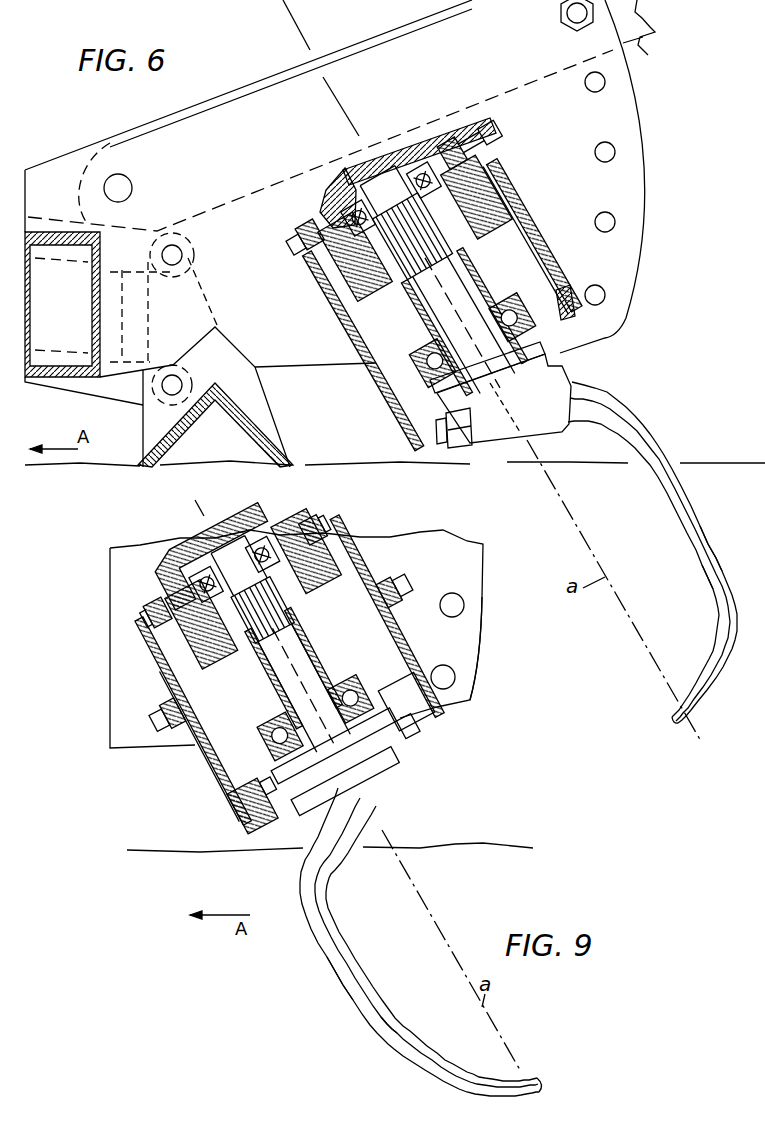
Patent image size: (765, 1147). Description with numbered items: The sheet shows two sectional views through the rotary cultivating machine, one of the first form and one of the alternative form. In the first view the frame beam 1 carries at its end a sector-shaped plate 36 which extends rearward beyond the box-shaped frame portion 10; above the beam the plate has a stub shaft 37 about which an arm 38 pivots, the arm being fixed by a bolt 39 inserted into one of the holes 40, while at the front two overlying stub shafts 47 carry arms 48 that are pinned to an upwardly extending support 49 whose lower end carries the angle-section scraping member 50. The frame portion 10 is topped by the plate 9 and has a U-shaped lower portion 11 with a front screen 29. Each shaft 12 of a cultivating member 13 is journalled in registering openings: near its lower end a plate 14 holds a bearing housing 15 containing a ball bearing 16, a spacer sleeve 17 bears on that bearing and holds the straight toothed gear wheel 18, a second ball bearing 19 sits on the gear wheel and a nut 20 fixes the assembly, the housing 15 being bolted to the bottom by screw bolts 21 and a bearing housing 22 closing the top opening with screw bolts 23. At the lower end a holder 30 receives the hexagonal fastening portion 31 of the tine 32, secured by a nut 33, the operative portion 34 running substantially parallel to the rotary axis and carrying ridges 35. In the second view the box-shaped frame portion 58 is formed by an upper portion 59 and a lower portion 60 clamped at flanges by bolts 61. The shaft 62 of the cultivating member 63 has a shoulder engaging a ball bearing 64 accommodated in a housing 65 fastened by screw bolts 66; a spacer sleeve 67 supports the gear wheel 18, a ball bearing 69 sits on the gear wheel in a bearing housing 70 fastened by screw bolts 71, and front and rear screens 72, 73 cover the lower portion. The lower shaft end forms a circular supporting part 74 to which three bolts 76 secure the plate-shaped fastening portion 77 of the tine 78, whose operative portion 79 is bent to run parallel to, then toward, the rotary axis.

In FIG. 6, the frame beam 1 is at (67, 375).
In FIG. 6, the plate 9 is at (503, 118).
In FIG. 6, the box-shaped frame portion 10 is at (543, 233).
In FIG. 6, the lower portion 11 is at (523, 213).
In FIG. 6, the shaft 12 is at (463, 283).
In FIG. 6, the cultivating member 13 is at (623, 517).
In FIG. 6, the plate 14 is at (527, 344).
In FIG. 6, the bearing housing 15 is at (417, 370).
In FIG. 6, the ball bearing 16 is at (507, 307).
In FIG. 6, the spacer sleeve 17 is at (423, 318).
In FIG. 6, the gear wheel 18 is at (355, 286).
In FIG. 9, the gear wheel 18 is at (227, 649).
In FIG. 6, the ball bearing 19 is at (430, 157).
In FIG. 6, the nut 20 is at (353, 163).
In FIG. 6, the screw bolts 21 is at (570, 318).
In FIG. 6, the bearing housing 22 is at (400, 138).
In FIG. 6, the screw bolts 23 is at (307, 224).
In FIG. 6, the screen 29 is at (402, 441).
In FIG. 6, the holder 30 is at (525, 444).
In FIG. 6, the fastening portion 31 is at (450, 446).
In FIG. 6, the tine 32 is at (662, 440).
In FIG. 6, the nut 33 is at (467, 451).
In FIG. 6, the operative portion 34 is at (697, 508).
In FIG. 6, the ridge 35 is at (707, 564).
In FIG. 9, the ridge 35 is at (397, 1048).
In FIG. 6, the sector-shaped plate 36 is at (637, 182).
In FIG. 9, the sector-shaped plate 36 is at (482, 566).
In FIG. 6, the stub shaft 37 is at (133, 183).
In FIG. 6, the arm 38 is at (648, 55).
In FIG. 6, the bolt 39 is at (562, 30).
In FIG. 6, the holes 40 is at (600, 93).
In FIG. 9, the holes 40 is at (464, 606).
In FIG. 6, the stub shafts / pins 47 is at (182, 250).
In FIG. 6, the arm 48 is at (141, 312).
In FIG. 6, the support 49 is at (270, 418).
In FIG. 6, the scraping member 50 is at (290, 460).
In FIG. 9, the box-shaped frame portion 58 is at (353, 537).
In FIG. 9, the upper portion 59 is at (153, 659).
In FIG. 9, the lower portion 60 is at (213, 758).
In FIG. 9, the bolts 61 is at (383, 576).
In FIG. 9, the shaft 62 is at (303, 657).
In FIG. 9, the cultivating member 63 is at (398, 921).
In FIG. 9, the ball bearing 64 is at (357, 674).
In FIG. 9, the housing 65 is at (277, 751).
In FIG. 9, the screw bolts 66 is at (400, 724).
In FIG. 9, the spacer sleeve 67 is at (257, 684).
In FIG. 9, the ball bearing 69 is at (213, 588).
In FIG. 9, the bearing housing 70 is at (203, 536).
In FIG. 9, the screw bolts 71 is at (303, 521).
In FIG. 9, the screen 72 is at (248, 814).
In FIG. 9, the screen 73 is at (470, 701).
In FIG. 9, the circular supporting part 74 is at (367, 784).
In FIG. 9, the bolts 76 is at (347, 798).
In FIG. 9, the fastening portion 77 is at (397, 748).
In FIG. 9, the tine 78 is at (320, 952).
In FIG. 9, the operative portion 79 is at (353, 1003).